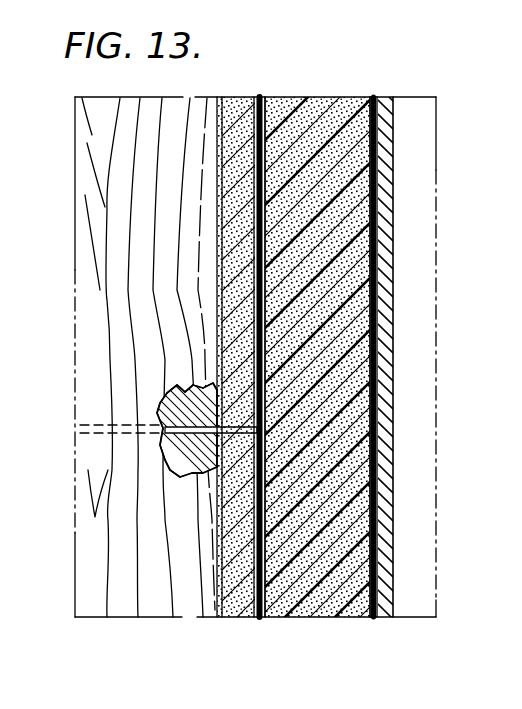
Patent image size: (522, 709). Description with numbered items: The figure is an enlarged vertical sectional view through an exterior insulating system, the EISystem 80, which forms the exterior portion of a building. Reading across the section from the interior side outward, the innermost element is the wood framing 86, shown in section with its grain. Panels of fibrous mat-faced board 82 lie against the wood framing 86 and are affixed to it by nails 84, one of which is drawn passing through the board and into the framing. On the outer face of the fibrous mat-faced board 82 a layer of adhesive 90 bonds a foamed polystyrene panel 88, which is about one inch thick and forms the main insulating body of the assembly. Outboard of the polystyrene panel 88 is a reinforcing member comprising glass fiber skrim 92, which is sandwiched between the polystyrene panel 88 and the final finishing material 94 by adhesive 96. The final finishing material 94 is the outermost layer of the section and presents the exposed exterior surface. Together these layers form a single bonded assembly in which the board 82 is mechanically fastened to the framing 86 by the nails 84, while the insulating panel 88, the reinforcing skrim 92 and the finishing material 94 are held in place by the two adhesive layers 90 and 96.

The EISystem 80 is at (297, 95).
The fibrous mat-faced board 82 is at (237, 110).
The nails 84 is at (183, 470).
The wood framing 86 is at (84, 158).
The foamed polystyrene panel 88 is at (310, 617).
The adhesive 90 is at (262, 622).
The glass fiber skrim 92 is at (376, 108).
The final finishing material 94 is at (395, 618).
The adhesive 96 is at (338, 421).